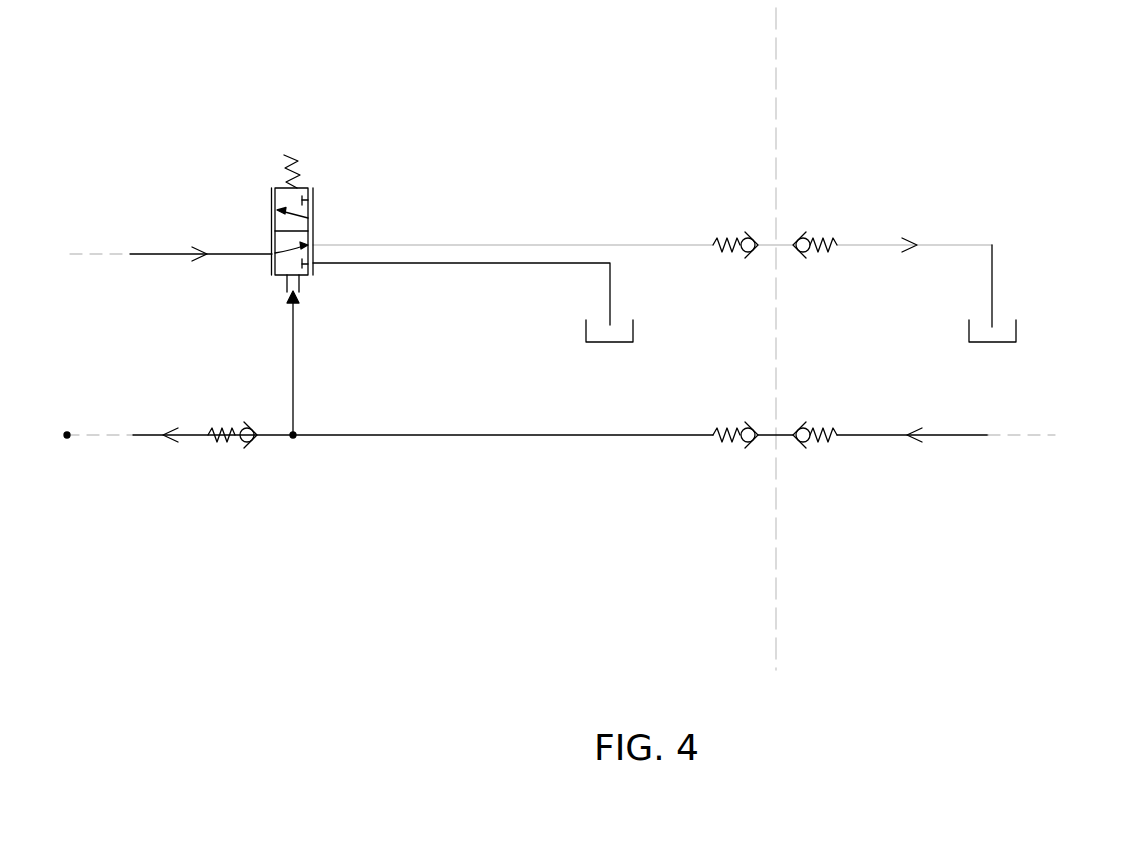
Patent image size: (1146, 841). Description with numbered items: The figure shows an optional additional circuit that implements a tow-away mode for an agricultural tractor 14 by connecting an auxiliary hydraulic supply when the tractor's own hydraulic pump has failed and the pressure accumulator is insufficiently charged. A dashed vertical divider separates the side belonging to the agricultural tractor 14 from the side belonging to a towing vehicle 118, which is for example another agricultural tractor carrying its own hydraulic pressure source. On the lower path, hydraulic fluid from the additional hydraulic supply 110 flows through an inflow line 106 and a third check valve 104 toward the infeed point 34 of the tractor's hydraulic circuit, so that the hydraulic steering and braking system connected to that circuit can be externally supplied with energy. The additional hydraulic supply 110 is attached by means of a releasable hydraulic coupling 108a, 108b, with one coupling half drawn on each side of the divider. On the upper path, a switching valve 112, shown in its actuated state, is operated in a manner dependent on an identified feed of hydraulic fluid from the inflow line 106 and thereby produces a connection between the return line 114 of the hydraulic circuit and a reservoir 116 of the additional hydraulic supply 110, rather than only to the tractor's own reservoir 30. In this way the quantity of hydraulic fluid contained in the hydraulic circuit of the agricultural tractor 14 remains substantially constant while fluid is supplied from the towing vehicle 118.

The agricultural tractor 14 is at (688, 59).
The towing vehicle 118 is at (905, 59).
The return line 114 is at (155, 254).
The switching valve 112 is at (306, 188).
The reservoir 30 is at (633, 335).
The releasable hydraulic coupling 108a is at (777, 245).
The reservoir of the additional hydraulic supply 116 is at (1016, 334).
The inflow line 106 is at (453, 435).
The infeed point 34 is at (67, 438).
The third check valve 104 is at (247, 445).
The releasable hydraulic coupling 108b is at (774, 436).
The additional hydraulic supply 110 is at (946, 587).